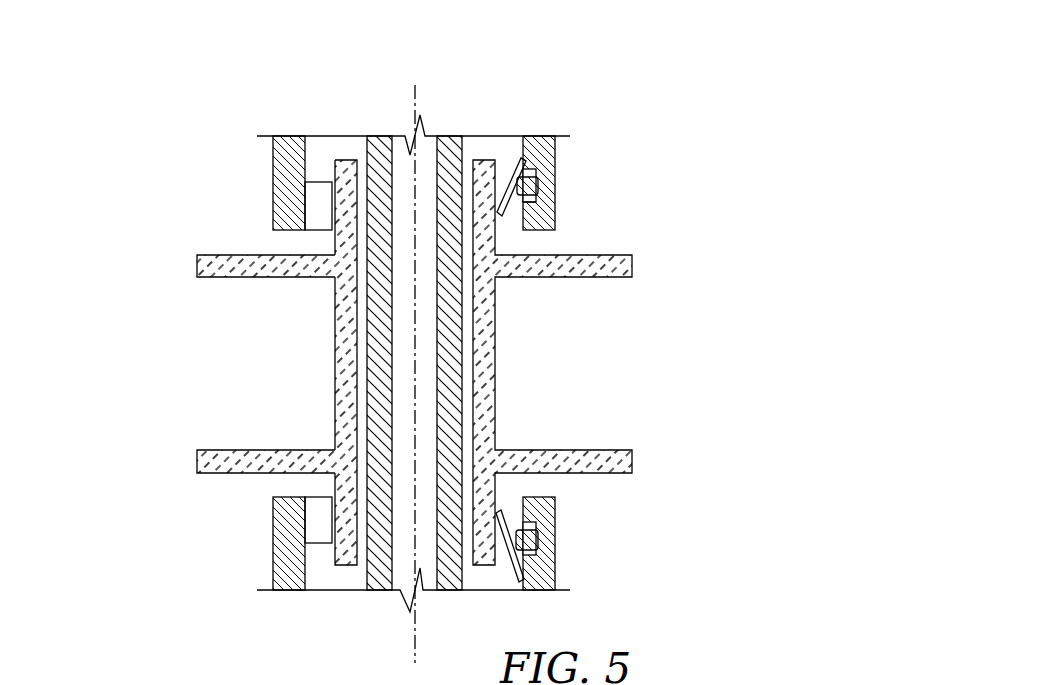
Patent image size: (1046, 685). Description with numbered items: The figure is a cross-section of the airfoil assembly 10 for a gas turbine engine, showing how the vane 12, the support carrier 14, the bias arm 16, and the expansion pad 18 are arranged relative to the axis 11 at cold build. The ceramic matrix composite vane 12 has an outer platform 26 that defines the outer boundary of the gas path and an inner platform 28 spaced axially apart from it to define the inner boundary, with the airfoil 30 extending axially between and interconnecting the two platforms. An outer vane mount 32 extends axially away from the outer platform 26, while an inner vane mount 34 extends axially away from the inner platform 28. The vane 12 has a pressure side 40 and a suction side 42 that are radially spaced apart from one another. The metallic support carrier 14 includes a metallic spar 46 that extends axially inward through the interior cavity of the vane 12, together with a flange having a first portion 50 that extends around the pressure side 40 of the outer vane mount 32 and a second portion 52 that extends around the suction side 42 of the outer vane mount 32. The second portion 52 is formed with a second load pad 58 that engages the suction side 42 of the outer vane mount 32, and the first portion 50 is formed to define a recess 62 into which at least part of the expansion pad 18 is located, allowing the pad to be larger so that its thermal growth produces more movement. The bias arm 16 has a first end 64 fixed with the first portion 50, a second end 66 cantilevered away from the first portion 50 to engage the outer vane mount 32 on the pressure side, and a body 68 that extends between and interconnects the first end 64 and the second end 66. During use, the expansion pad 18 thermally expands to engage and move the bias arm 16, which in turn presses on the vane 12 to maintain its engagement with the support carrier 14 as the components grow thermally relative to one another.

The airfoil assembly 10 is at (192, 95).
The axis 11 is at (425, 100).
The vane 12 is at (138, 347).
The support carrier 14 is at (622, 82).
The bias arm 16 is at (502, 137).
The expansion pad 18 is at (532, 166).
The outer platform 26 is at (197, 262).
The inner platform 28 is at (197, 459).
The airfoil 30 is at (300, 303).
The outer vane mount 32 is at (347, 160).
The inner vane mount 34 is at (327, 483).
The pressure side 40 is at (497, 365).
The suction side 42 is at (333, 358).
The metallic spar 46 is at (367, 572).
The first portion 50 is at (562, 190).
The second portion 52 is at (268, 181).
The second load pad 58 is at (323, 180).
The recess 62 is at (554, 183).
The first end 64 is at (525, 137).
The second end 66 is at (505, 222).
The body 68 is at (520, 200).